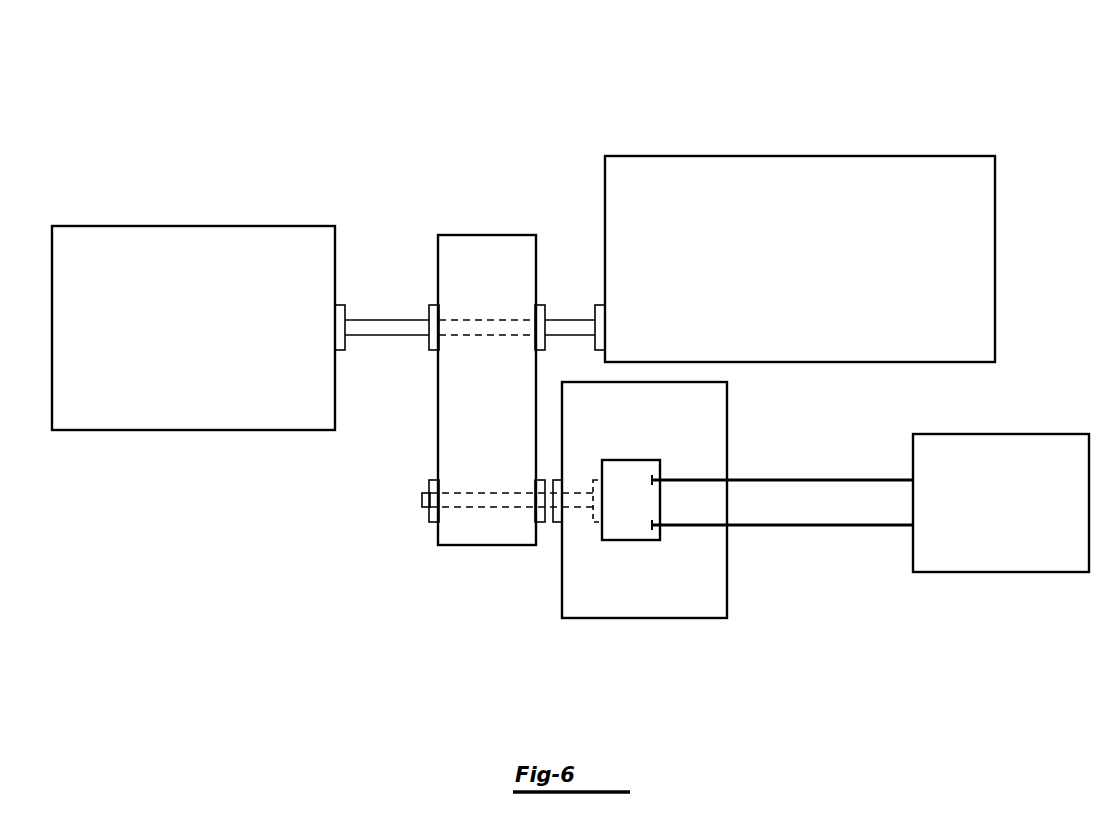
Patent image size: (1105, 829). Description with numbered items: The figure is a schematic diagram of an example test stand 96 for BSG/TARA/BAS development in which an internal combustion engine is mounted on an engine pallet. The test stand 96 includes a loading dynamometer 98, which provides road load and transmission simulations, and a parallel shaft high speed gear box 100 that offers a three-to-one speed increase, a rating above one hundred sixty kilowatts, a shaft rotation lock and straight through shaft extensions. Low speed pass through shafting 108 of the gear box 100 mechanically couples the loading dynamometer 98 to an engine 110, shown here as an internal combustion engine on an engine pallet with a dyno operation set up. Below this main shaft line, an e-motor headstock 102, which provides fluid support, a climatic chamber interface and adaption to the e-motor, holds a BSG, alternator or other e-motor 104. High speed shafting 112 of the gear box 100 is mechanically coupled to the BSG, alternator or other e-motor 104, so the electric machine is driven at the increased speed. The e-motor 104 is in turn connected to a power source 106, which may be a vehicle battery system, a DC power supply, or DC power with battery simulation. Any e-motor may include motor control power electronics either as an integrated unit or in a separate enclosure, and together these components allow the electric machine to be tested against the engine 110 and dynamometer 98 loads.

The test stand 96 is at (132, 78).
The loading dynamometer 98 is at (193, 226).
The parallel shaft high speed gear box 100 is at (488, 235).
The e-motor headstock 102 is at (643, 618).
The BSG, alternator or other e-motor 104 is at (630, 460).
The power source 106 is at (1000, 572).
The low speed pass through shafting 108 is at (571, 320).
The engine 110 is at (800, 156).
The high speed shafting 112 is at (549, 522).